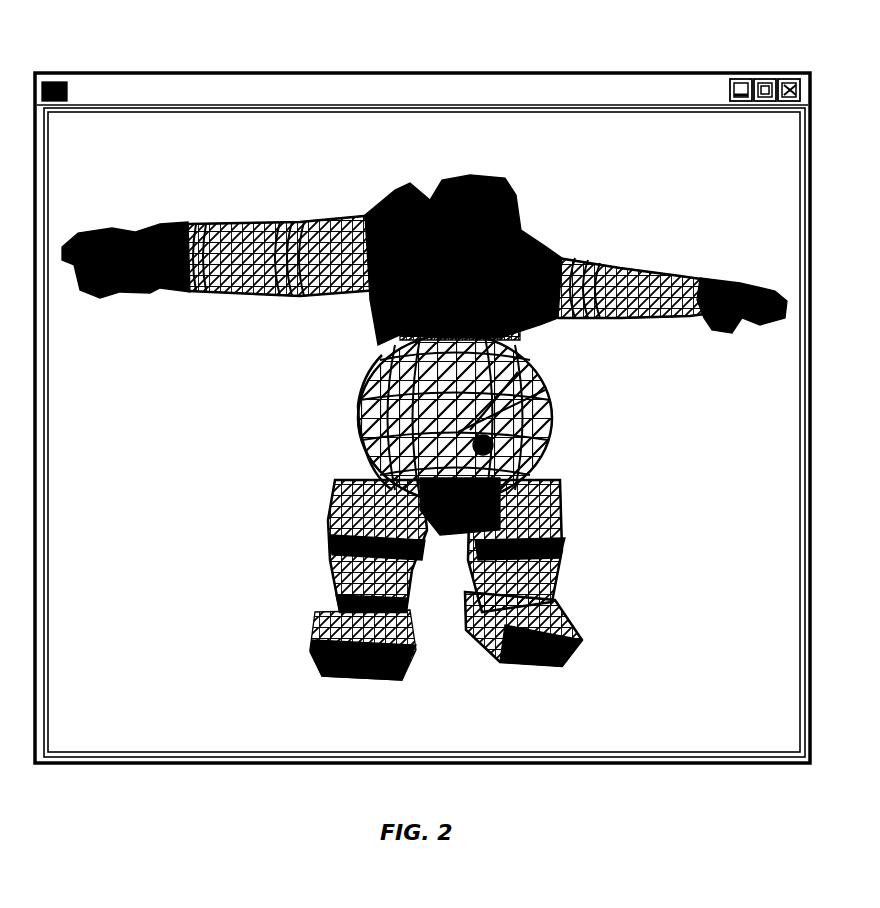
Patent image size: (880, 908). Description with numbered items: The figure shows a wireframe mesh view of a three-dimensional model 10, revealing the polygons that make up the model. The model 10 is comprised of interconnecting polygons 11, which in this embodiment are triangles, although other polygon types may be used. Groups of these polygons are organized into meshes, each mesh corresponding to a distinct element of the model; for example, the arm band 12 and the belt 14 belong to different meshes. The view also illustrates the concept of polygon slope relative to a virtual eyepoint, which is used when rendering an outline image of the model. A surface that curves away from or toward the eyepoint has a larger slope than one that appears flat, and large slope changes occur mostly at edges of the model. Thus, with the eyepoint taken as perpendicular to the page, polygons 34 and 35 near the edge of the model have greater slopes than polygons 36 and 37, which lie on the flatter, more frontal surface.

The 3D model 10 is at (99, 31).
The polygons 11 is at (292, 405).
The arm band 12 is at (165, 223).
The belt 14 is at (358, 453).
The polygon 34 is at (357, 396).
The polygon 35 is at (357, 372).
The polygon 36 is at (518, 372).
The polygon 37 is at (545, 390).